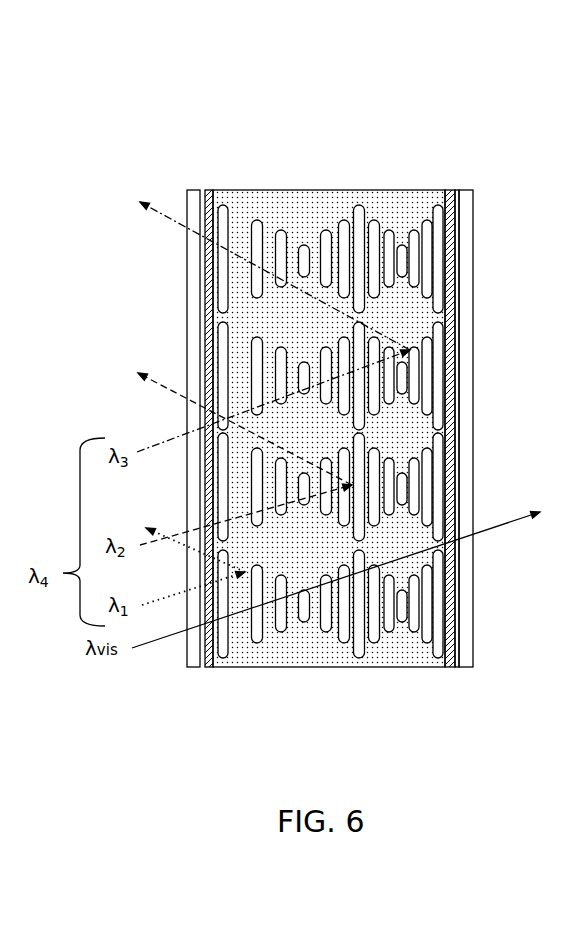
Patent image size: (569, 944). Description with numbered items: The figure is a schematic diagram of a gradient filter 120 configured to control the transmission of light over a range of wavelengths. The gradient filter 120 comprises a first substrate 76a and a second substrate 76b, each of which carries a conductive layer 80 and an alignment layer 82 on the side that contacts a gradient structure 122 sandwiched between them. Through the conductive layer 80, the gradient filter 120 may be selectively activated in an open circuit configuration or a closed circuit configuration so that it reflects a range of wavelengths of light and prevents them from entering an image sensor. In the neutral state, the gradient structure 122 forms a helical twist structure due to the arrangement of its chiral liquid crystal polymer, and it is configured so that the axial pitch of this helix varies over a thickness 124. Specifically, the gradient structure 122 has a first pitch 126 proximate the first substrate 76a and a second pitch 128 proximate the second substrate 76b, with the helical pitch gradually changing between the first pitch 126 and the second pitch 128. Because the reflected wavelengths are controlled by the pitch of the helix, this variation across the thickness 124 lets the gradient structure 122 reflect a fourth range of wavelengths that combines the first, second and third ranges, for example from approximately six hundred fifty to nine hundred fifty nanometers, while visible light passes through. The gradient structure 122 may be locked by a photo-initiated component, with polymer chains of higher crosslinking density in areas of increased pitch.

The gradient filter 120 is at (150, 100).
The gradient structure 122 is at (318, 138).
The thickness 124 is at (215, 680).
The first pitch 126 is at (243, 213).
The second pitch 128 is at (411, 213).
The first substrate 76a is at (193, 668).
The second substrate 76b is at (464, 668).
The conductive layer 80 is at (457, 668).
The alignment layer 82 is at (448, 668).